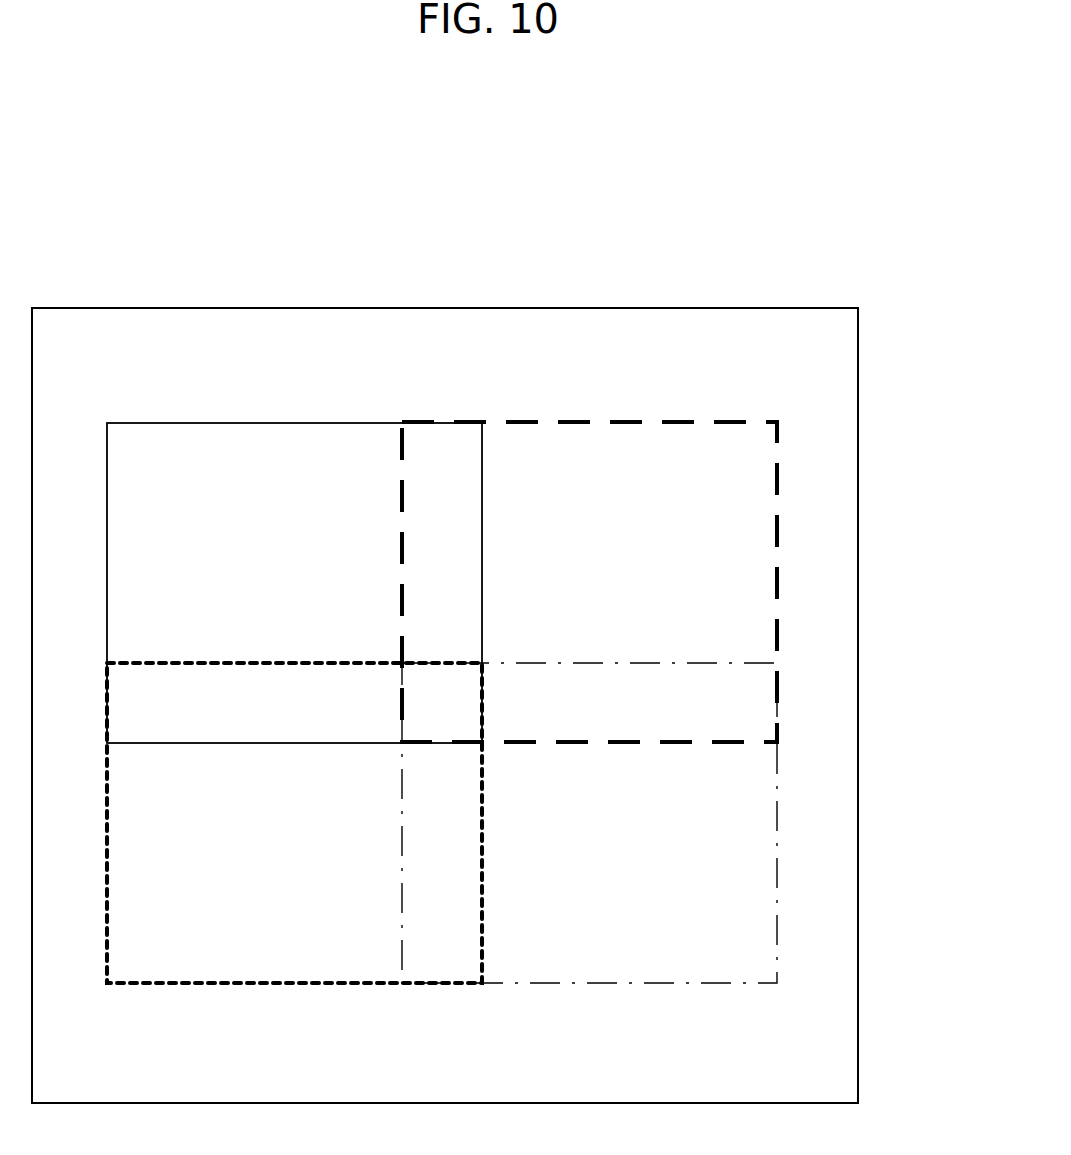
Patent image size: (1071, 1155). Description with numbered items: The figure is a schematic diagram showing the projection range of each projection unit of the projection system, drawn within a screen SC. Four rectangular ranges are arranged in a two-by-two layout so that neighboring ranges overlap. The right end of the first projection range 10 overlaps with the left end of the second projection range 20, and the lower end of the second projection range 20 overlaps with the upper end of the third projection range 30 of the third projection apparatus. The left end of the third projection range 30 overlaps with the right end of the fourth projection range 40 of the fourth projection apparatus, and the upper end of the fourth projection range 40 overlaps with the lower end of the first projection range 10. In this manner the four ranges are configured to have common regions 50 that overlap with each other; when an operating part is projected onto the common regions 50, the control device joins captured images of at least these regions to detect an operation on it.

The first projection range 10 is at (295, 423).
The second projection range 20 is at (600, 422).
The third projection range 30 is at (600, 985).
The fourth projection range 40 is at (287, 985).
The common regions 50 is at (443, 706).
The screen SC is at (858, 706).